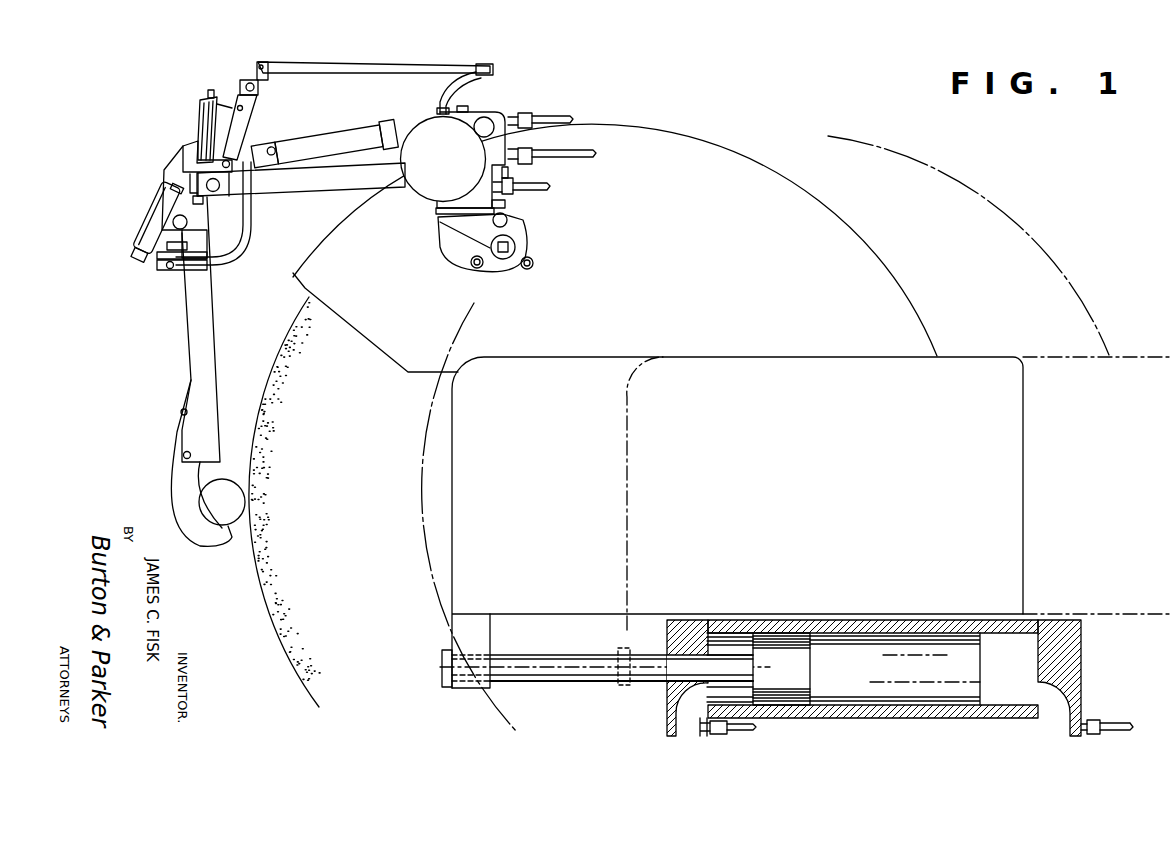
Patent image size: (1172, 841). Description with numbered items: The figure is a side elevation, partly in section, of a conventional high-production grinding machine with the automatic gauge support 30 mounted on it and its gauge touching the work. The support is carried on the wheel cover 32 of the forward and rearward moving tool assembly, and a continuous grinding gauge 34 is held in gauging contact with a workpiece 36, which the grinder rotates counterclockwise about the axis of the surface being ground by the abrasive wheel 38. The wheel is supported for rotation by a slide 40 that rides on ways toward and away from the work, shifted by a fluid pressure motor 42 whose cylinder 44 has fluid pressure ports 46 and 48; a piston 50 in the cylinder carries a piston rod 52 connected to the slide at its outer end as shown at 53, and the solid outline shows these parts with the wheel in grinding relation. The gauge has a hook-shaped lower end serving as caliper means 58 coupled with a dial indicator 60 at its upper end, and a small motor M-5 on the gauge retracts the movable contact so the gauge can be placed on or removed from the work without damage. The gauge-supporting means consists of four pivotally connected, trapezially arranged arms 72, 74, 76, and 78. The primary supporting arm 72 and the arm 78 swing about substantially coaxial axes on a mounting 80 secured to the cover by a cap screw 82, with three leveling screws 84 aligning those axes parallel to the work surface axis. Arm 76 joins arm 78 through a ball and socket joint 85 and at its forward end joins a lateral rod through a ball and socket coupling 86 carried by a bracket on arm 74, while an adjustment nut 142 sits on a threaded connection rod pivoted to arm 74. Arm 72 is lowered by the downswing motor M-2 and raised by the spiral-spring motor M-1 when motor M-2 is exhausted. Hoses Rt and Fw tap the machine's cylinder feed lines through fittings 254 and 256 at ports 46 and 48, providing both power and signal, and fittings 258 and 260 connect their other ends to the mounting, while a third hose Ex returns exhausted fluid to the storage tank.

The automatic gauge support 30 is at (350, 107).
The wheel cover 32 is at (783, 184).
The continuous grinding gauge 34 is at (178, 350).
The workpiece 36 is at (213, 510).
The abrasive wheel 38 is at (331, 458).
The slide 40 is at (873, 478).
The fluid pressure motor 42 is at (902, 718).
The cylinder 44 is at (984, 718).
The fluid pressure port 46 is at (684, 731).
The fluid pressure port 48 is at (1050, 738).
The piston 50 is at (771, 678).
The piston rod 52 is at (600, 670).
The piston rod connection 53 is at (468, 684).
The caliper means 58 is at (172, 489).
The dial indicator 60 is at (146, 231).
The primary supporting arm 72 is at (328, 192).
The arm 74 is at (238, 129).
The arm 76 is at (353, 66).
The arm 78 is at (440, 100).
The mounting 80 is at (512, 207).
The cap screw 82 is at (514, 246).
The leveling screws 84 is at (531, 267).
The ball and socket joint 85 is at (494, 67).
The ball and socket coupling 86 is at (260, 65).
The adjustment nut 142 is at (211, 90).
The fitting 254 is at (724, 738).
The fitting 256 is at (1094, 721).
The fitting 258 is at (525, 185).
The fitting 260 is at (524, 153).
The upswing motor M-1 is at (420, 177).
The downswing motor M-2 is at (330, 144).
The small motor M-5 is at (168, 266).
The exhaust hose Ex is at (566, 119).
The fluid pressure hose Rt is at (746, 735).
The fluid pressure hose Fw is at (1122, 728).